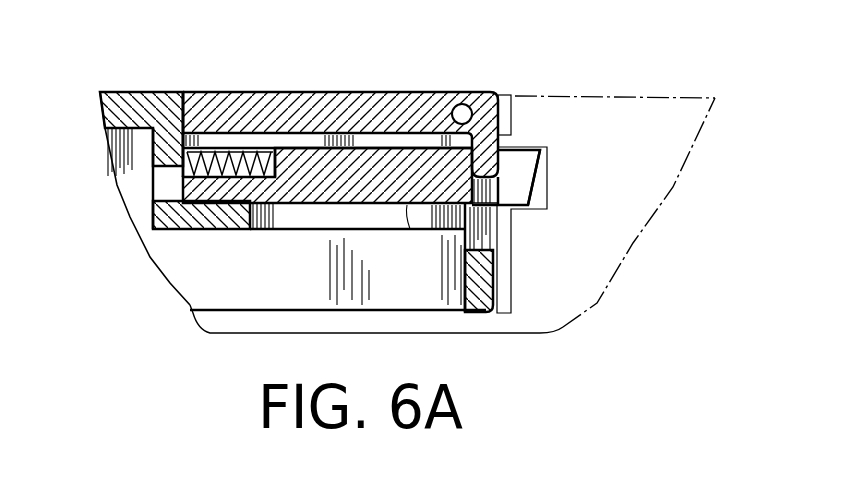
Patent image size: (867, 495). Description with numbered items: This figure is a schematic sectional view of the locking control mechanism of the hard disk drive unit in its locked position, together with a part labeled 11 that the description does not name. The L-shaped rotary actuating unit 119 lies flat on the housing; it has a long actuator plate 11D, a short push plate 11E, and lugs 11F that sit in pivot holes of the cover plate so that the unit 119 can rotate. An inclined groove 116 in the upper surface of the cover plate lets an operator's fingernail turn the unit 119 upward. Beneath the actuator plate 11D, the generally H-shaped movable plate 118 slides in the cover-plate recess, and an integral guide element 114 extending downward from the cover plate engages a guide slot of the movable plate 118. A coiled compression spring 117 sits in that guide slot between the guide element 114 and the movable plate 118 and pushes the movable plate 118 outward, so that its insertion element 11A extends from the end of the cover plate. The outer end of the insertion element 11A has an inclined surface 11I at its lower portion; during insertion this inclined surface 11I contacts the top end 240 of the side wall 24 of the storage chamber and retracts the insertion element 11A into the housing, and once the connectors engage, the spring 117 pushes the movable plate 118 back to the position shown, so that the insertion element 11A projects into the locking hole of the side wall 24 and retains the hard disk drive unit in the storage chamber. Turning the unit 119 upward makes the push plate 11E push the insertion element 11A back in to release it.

The housing body 11 is at (140, 92).
The guide element 114 is at (158, 153).
The inclined groove 116 is at (172, 92).
The coiled compression spring 117 is at (225, 128).
The movable plate 118 is at (284, 232).
The rotary actuating unit 119 is at (418, 74).
The long actuator plate 11D is at (353, 110).
The short push plate 11E is at (500, 147).
The lug 11F is at (455, 104).
The insertion element 11A is at (550, 195).
The inclined surface 11I is at (525, 180).
The top end of the side wall 240 is at (511, 96).
The side wall 24 is at (540, 235).